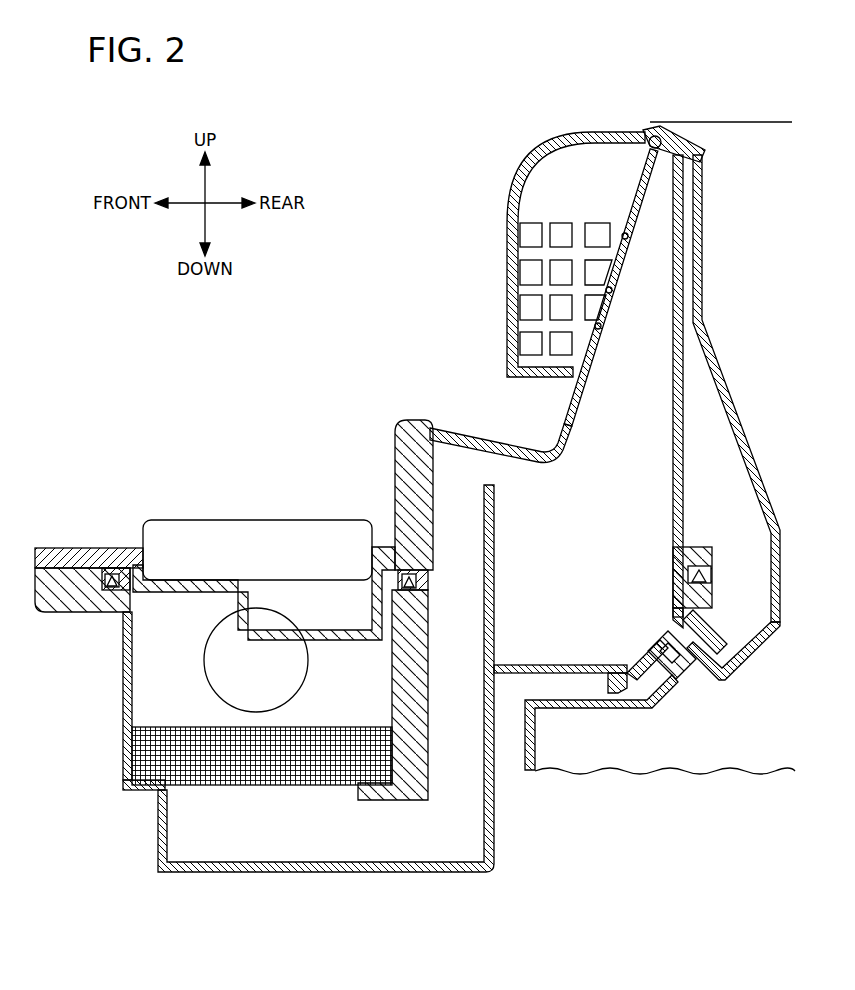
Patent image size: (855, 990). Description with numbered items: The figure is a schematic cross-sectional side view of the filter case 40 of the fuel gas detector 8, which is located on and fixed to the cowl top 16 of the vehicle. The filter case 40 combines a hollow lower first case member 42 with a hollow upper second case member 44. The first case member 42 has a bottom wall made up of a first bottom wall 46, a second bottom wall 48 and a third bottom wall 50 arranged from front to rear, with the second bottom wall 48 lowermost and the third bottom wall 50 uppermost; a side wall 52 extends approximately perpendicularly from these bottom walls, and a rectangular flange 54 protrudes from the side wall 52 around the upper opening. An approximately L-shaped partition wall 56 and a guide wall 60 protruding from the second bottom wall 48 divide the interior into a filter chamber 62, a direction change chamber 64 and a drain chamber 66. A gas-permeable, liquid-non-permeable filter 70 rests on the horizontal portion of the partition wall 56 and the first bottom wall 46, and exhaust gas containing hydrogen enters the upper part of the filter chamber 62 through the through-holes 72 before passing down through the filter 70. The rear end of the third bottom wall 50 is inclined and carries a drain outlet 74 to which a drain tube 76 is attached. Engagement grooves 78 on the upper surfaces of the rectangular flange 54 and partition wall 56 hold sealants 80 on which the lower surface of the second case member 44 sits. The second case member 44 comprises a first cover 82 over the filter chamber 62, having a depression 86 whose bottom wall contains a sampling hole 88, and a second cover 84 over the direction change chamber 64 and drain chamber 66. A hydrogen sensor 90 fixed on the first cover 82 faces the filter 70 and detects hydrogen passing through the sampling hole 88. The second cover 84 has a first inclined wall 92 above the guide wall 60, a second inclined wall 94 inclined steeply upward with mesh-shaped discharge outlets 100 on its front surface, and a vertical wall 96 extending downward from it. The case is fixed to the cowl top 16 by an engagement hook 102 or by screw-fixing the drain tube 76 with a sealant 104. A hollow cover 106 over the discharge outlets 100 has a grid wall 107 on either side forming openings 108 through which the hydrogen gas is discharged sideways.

The fuel gas detector 8 is at (343, 462).
The cowl top 16 is at (698, 208).
The filter case 40 is at (73, 527).
The first case member 42 is at (373, 697).
The second case member 44 is at (53, 542).
The first bottom wall 46 is at (128, 784).
The second bottom wall 48 is at (245, 872).
The third bottom wall 50 is at (540, 664).
The side wall 52 is at (125, 652).
The rectangular flange 54 is at (62, 600).
The partition wall 56 is at (392, 801).
The guide wall 60 is at (495, 566).
The filter chamber 62 is at (122, 697).
The direction change chamber 64 is at (496, 831).
The drain chamber 66 is at (683, 436).
The filter 70 is at (330, 745).
The through-holes 72 is at (206, 666).
The drain outlet 74 is at (650, 662).
The drain tube 76 is at (632, 666).
The engagement grooves 78 is at (120, 586).
The sealants 80 is at (112, 572).
The first cover 82 is at (178, 582).
The second cover 84 is at (624, 510).
The depression 86 is at (306, 630).
The sampling hole 88 is at (373, 632).
The hydrogen sensor 90 is at (298, 534).
The first inclined wall 92 is at (506, 445).
The second inclined wall 94 is at (556, 460).
The vertical wall 96 is at (673, 458).
The discharge outlets 100 is at (625, 236).
The engagement hook 102 is at (654, 137).
The sealant 104 is at (695, 641).
The hollow cover 106 is at (522, 172).
The grid wall 107 is at (528, 320).
The openings 108 is at (528, 264).